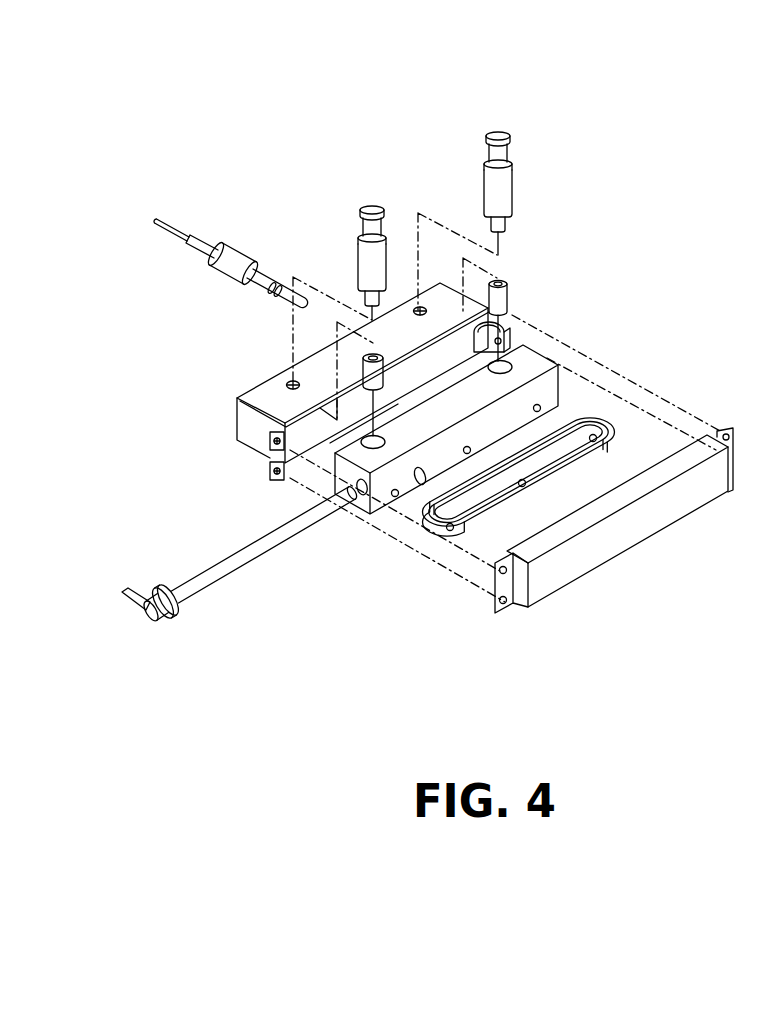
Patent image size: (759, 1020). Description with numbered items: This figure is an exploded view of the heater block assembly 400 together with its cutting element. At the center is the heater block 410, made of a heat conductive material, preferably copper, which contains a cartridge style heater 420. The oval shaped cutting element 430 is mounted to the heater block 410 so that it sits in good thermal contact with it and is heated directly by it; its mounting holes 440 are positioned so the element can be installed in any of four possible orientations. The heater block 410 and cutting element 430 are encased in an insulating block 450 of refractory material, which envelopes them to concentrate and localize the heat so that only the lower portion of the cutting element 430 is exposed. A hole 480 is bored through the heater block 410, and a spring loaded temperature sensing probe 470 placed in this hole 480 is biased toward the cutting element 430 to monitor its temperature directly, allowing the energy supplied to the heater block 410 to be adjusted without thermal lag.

The heater block assembly 400 is at (328, 666).
The heater block 410 is at (545, 358).
The cartridge style heater 420 is at (237, 548).
The cutting element 430 is at (607, 405).
The mounting holes 440 is at (522, 487).
The insulating block 450 is at (247, 397).
The temperature sensing probe 470 is at (236, 250).
The hole 480 is at (511, 420).